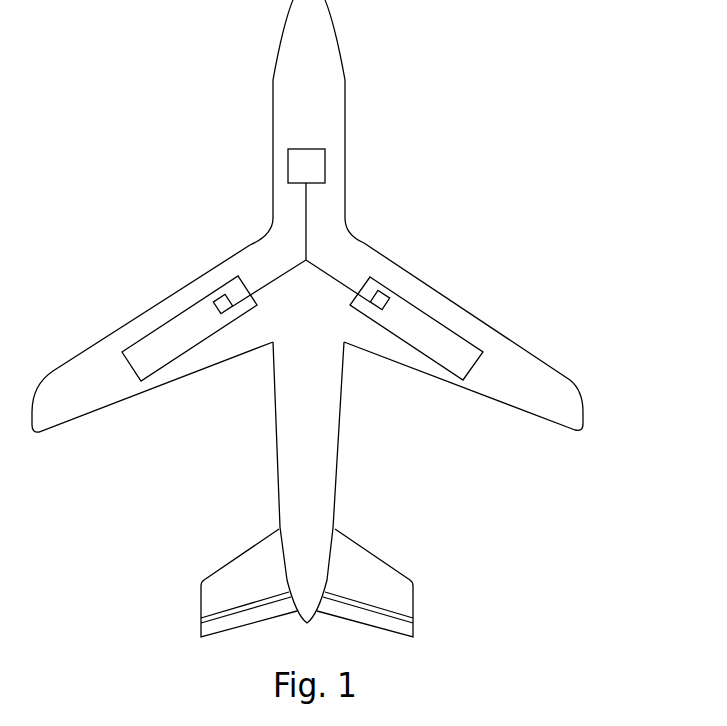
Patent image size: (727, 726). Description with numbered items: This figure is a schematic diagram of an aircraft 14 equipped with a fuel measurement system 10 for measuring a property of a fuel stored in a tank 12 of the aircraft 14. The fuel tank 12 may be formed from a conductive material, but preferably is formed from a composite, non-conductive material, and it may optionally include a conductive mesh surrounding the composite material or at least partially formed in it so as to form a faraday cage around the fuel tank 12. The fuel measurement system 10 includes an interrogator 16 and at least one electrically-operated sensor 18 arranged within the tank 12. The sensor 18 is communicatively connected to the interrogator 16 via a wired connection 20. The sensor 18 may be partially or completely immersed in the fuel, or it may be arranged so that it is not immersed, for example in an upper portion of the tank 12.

The fuel measurement system 10 is at (436, 141).
The fuel tank 12 is at (193, 302).
The aircraft 14 is at (347, 97).
The interrogator 16 is at (288, 173).
The electrically-operated sensor 18 is at (220, 297).
The wired connection 20 is at (302, 237).